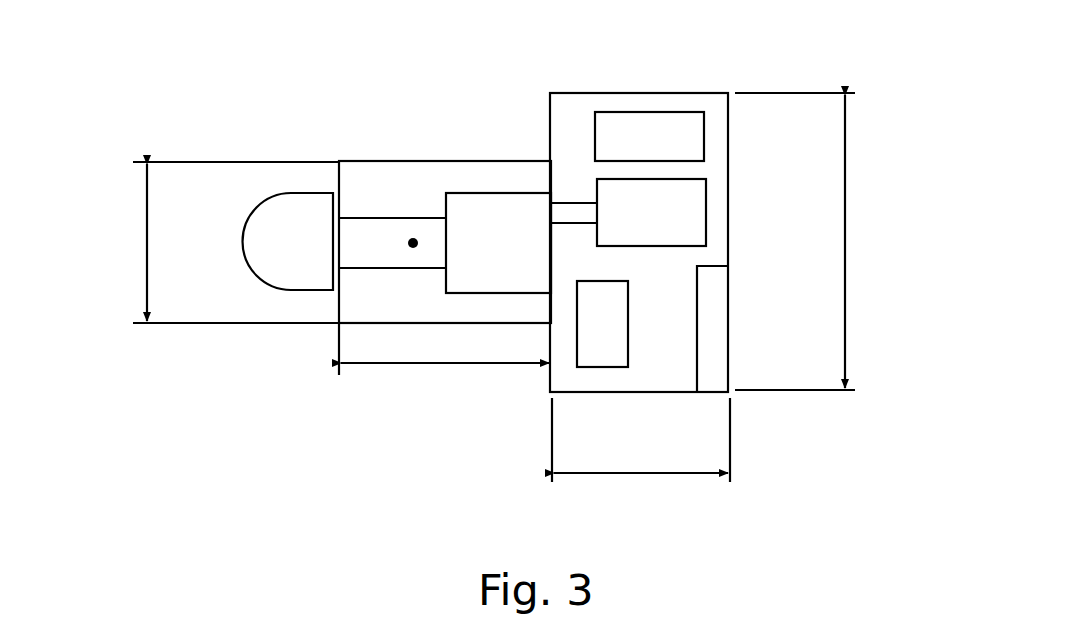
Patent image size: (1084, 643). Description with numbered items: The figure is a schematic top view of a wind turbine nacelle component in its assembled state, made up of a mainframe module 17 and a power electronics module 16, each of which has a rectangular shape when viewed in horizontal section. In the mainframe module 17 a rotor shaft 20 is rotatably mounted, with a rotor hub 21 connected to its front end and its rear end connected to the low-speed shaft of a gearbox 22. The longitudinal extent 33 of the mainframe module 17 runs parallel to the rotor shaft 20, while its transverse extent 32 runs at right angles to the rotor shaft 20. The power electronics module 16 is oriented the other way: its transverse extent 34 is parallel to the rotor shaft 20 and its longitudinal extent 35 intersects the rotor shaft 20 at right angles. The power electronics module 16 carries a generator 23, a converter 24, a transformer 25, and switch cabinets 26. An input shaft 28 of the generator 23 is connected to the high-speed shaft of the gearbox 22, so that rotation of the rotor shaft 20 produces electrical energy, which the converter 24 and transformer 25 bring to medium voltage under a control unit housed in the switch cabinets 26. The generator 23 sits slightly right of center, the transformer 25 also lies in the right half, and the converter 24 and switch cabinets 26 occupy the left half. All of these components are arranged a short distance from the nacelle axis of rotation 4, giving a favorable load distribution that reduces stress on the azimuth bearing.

The nacelle axis of rotation 4 is at (413, 243).
The power electronics module 16 is at (670, 93).
The mainframe module 17 is at (445, 161).
The rotor shaft 20 is at (370, 238).
The rotor hub 21 is at (265, 246).
The gearbox 22 is at (500, 210).
The generator 23 is at (686, 210).
The converter 24 is at (610, 355).
The transformer 25 is at (686, 133).
The switch cabinets 26 is at (720, 330).
The input shaft 28 is at (577, 212).
The transverse extent 32 is at (147, 243).
The longitudinal extent 33 is at (445, 363).
The transverse extent 34 is at (637, 475).
The longitudinal extent 35 is at (845, 243).